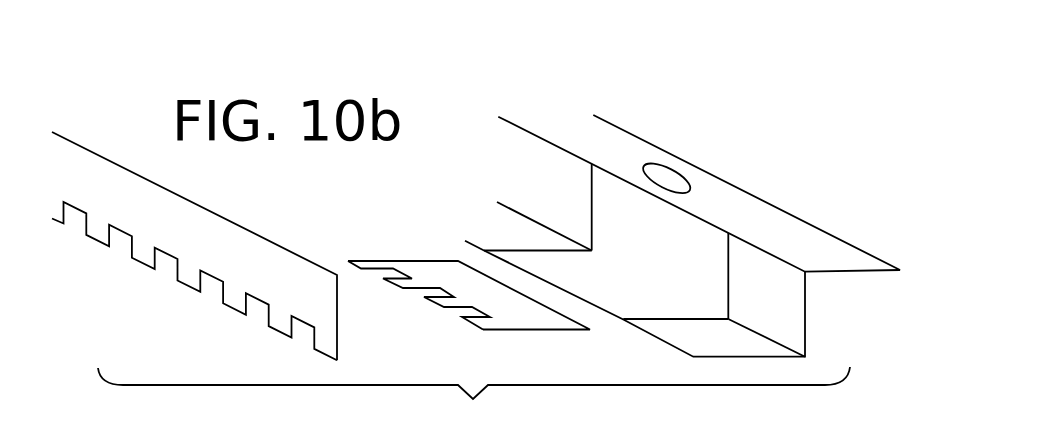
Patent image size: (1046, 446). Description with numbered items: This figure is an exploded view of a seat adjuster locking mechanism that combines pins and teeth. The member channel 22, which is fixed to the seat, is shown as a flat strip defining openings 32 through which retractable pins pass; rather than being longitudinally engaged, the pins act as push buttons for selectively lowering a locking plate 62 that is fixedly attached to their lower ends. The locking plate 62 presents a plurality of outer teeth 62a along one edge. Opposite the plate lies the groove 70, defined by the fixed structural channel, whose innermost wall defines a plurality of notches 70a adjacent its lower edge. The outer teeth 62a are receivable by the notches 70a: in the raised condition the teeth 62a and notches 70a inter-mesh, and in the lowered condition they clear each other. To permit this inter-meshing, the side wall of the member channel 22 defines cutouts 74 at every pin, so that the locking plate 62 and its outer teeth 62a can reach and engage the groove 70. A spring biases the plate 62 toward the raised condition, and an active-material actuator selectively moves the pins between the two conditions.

The member channel 22 is at (699, 189).
The openings 32 is at (675, 172).
The locking plate 62 is at (466, 251).
The outer teeth 62a is at (370, 266).
The groove 70 is at (194, 246).
The notches 70a is at (187, 286).
The cutouts 74 is at (676, 258).